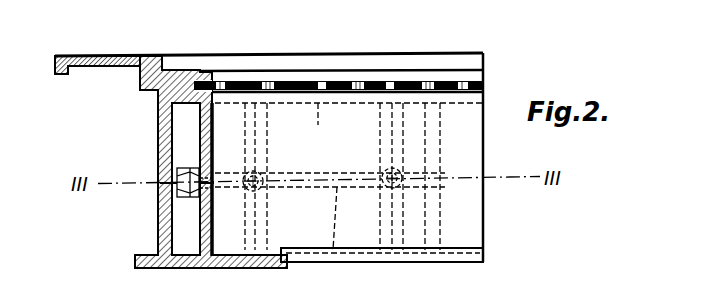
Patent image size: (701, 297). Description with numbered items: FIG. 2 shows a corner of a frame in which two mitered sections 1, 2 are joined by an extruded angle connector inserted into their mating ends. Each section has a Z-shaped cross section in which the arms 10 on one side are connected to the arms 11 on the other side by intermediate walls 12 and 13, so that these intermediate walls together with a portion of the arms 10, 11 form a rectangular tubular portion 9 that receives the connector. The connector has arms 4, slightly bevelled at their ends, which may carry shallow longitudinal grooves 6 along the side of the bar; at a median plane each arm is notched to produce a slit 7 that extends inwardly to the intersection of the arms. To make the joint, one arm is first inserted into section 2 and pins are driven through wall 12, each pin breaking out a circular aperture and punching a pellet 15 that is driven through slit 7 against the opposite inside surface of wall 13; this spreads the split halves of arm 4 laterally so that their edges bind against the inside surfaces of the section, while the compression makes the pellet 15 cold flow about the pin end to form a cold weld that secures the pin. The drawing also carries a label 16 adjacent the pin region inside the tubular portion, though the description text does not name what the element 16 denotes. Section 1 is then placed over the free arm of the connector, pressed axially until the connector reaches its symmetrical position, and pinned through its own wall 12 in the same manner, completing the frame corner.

The mitered section 1 is at (158, 229).
The mitered section 2 is at (385, 264).
The arm 4 is at (337, 66).
The shallow longitudinal groove 6 is at (395, 93).
The slit 7 is at (334, 263).
The tubular portion 9 is at (457, 142).
The arm of section 10 is at (192, 71).
The arm of section 11 is at (208, 267).
The intermediate wall 12 is at (160, 164).
The intermediate wall 13 is at (212, 151).
The pellet 15 is at (215, 181).
The nut 16 is at (160, 188).